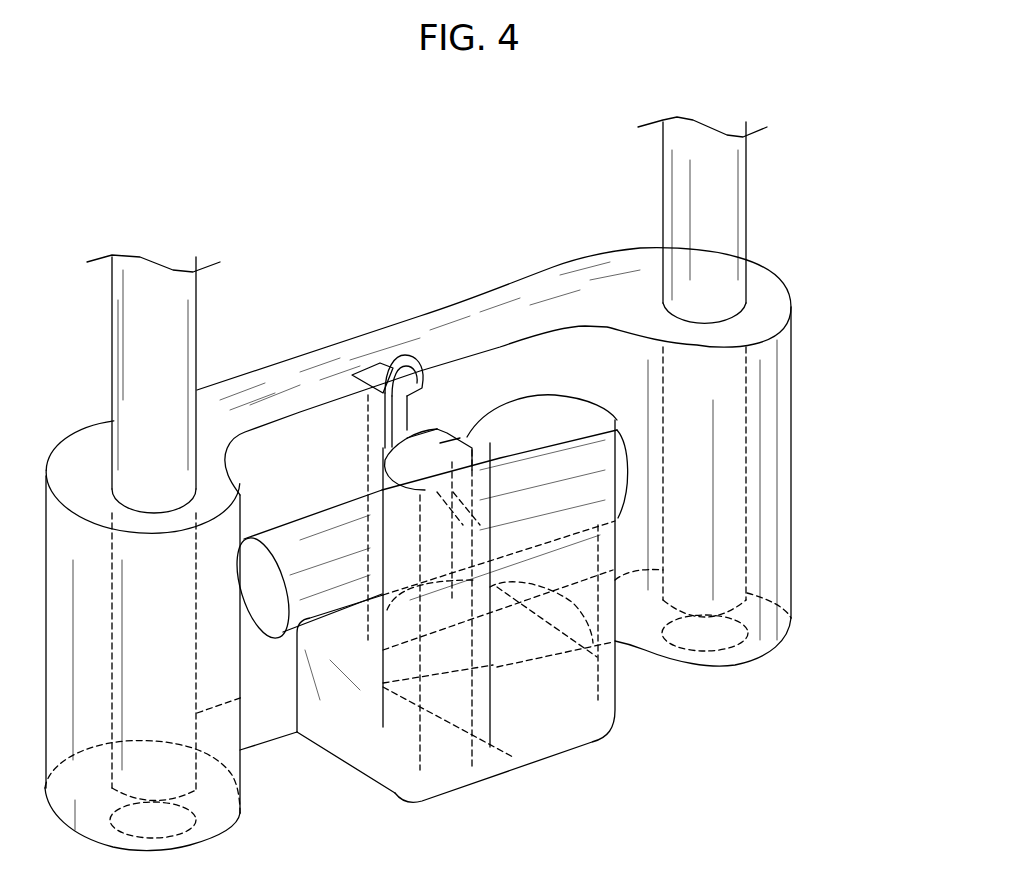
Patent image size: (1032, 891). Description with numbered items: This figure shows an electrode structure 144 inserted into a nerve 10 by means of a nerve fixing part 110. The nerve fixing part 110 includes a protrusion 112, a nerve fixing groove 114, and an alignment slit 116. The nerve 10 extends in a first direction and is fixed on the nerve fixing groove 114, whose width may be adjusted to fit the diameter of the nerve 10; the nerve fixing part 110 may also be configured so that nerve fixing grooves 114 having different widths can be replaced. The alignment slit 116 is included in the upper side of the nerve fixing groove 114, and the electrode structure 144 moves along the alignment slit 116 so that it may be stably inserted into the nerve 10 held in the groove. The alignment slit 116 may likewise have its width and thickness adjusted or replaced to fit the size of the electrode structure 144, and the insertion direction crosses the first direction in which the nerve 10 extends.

The nerve 10 is at (318, 520).
The nerve fixing part 110 is at (785, 551).
The protrusion 112 is at (608, 730).
The nerve fixing groove 114 is at (318, 655).
The alignment slit 116 is at (380, 377).
The electrode structure 144 is at (437, 427).